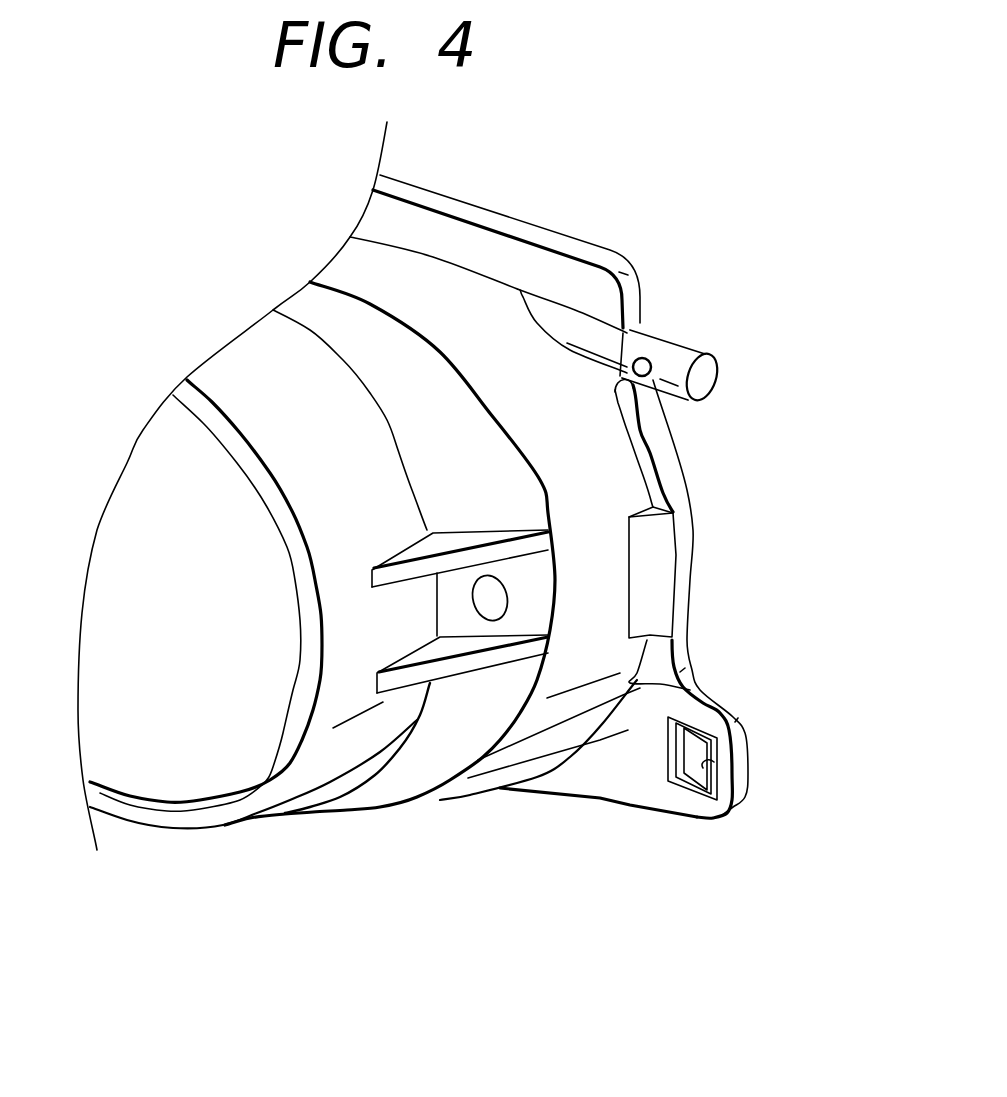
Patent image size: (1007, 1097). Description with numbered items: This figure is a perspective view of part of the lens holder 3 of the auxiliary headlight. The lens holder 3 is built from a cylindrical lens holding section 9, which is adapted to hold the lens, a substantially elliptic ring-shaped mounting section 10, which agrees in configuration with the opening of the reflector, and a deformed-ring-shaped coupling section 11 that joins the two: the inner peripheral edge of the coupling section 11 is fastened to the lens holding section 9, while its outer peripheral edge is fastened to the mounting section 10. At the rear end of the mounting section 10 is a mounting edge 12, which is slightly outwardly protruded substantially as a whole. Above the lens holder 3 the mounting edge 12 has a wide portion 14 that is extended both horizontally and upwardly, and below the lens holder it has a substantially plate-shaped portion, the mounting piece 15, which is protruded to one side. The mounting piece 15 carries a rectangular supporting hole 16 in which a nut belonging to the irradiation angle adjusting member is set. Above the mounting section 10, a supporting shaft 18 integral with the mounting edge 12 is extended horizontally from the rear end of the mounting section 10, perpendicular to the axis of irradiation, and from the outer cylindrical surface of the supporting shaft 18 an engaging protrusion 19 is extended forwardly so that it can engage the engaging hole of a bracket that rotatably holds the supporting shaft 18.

The lens holder 3 is at (780, 497).
The lens holding section 9 is at (290, 803).
The mounting section 10 is at (673, 796).
The coupling section 11 is at (487, 480).
The mounting edge 12 is at (685, 495).
The wide portion 14 is at (597, 283).
The mounting piece 15 is at (702, 808).
The supporting hole 16 is at (703, 768).
The supporting shaft 18 is at (680, 353).
The engaging protrusion 19 is at (634, 330).